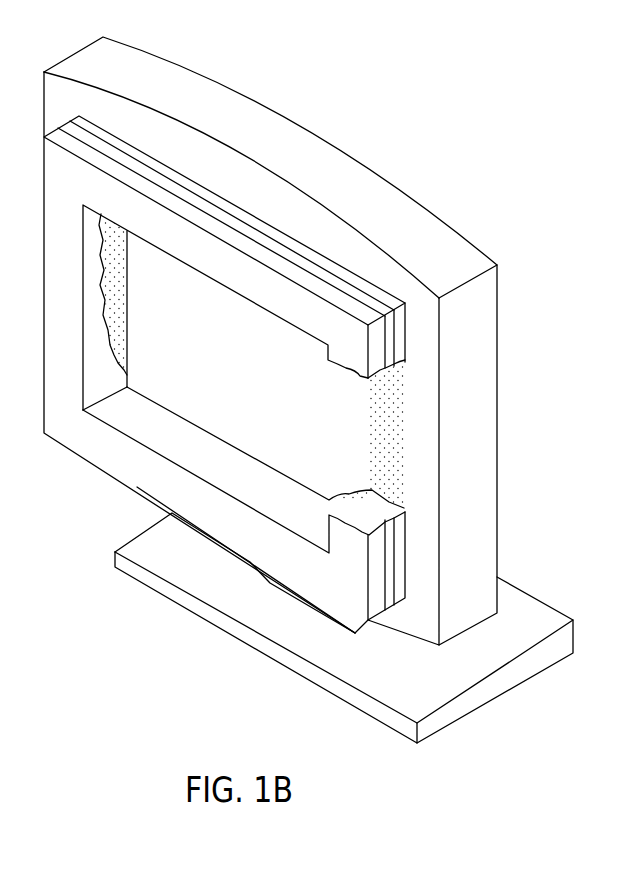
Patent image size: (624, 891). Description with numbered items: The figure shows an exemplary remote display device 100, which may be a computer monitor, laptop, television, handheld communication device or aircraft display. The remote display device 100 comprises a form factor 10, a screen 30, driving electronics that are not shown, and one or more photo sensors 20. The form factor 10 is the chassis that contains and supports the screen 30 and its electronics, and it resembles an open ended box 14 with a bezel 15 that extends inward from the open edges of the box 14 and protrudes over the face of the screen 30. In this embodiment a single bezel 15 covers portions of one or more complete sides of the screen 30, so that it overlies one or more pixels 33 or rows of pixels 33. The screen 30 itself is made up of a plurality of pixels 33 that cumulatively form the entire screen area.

The remote display device 100 is at (334, 92).
The form factor 10 is at (517, 340).
The open ended box 14 is at (452, 237).
The photo sensor 20 is at (217, 210).
The bezel 15 is at (285, 313).
The screen 30 is at (257, 392).
The pixels 33 is at (123, 300).